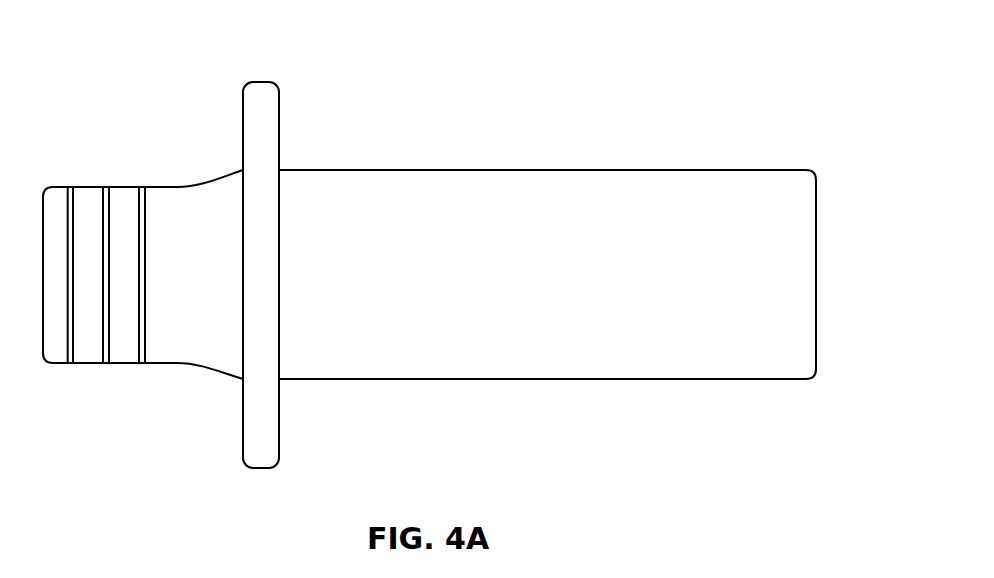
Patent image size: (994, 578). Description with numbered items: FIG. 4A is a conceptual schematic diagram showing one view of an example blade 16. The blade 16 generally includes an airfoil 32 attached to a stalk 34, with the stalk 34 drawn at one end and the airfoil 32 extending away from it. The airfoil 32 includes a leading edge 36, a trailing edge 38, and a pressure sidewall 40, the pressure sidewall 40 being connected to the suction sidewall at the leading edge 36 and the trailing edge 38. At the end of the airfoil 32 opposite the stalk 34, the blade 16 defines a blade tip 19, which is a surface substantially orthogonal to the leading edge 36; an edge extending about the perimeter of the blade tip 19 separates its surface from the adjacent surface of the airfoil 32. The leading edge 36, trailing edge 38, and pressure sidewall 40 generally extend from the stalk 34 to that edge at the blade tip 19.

The blade 16 is at (112, 52).
The blade tip 19 is at (828, 190).
The airfoil 32 is at (495, 375).
The stalk 34 is at (158, 365).
The leading edge 36 is at (388, 380).
The trailing edge 38 is at (456, 170).
The pressure sidewall 40 is at (520, 292).